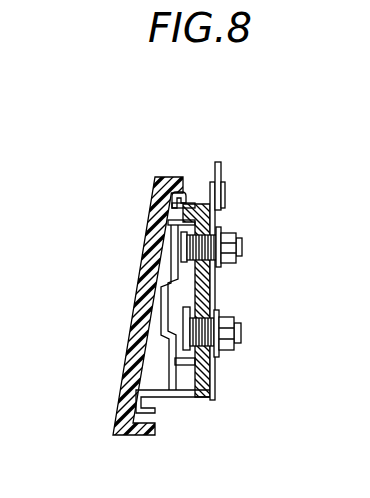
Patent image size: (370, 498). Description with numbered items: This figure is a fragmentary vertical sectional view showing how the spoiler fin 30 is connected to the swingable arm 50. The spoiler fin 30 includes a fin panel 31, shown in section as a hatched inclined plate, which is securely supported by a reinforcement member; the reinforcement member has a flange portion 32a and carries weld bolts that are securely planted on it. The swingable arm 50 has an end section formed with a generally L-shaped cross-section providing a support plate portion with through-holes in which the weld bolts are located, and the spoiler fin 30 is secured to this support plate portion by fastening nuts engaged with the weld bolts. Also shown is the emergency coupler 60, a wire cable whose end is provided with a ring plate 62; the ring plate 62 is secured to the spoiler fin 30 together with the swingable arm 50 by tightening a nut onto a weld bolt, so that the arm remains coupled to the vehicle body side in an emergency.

The spoiler fin 30 is at (185, 249).
The fin panel 31 is at (126, 381).
The channel member flange 32a is at (178, 395).
The swingable arm 50 is at (212, 387).
The emergency coupler 60 is at (232, 162).
The ring plate 62 is at (216, 216).